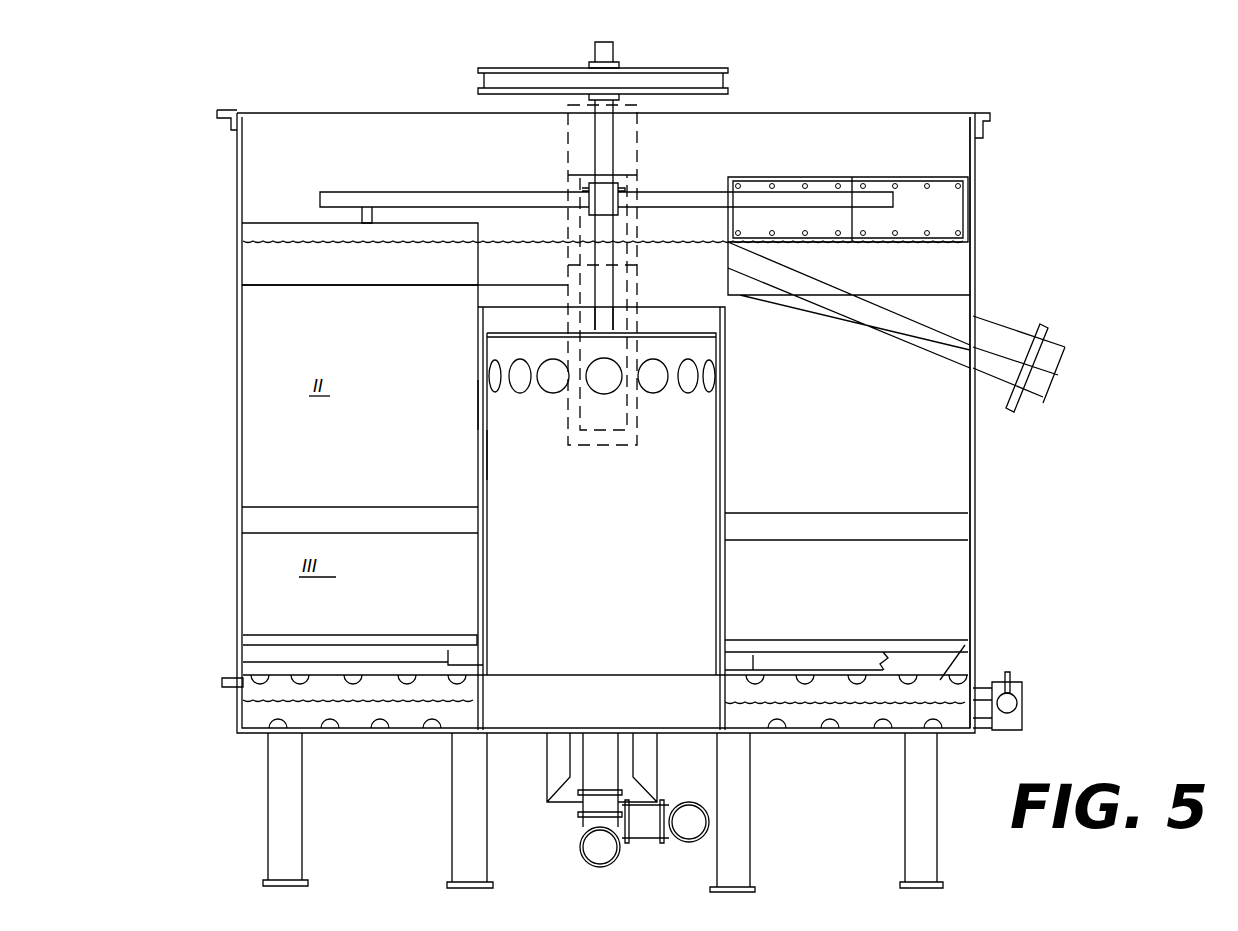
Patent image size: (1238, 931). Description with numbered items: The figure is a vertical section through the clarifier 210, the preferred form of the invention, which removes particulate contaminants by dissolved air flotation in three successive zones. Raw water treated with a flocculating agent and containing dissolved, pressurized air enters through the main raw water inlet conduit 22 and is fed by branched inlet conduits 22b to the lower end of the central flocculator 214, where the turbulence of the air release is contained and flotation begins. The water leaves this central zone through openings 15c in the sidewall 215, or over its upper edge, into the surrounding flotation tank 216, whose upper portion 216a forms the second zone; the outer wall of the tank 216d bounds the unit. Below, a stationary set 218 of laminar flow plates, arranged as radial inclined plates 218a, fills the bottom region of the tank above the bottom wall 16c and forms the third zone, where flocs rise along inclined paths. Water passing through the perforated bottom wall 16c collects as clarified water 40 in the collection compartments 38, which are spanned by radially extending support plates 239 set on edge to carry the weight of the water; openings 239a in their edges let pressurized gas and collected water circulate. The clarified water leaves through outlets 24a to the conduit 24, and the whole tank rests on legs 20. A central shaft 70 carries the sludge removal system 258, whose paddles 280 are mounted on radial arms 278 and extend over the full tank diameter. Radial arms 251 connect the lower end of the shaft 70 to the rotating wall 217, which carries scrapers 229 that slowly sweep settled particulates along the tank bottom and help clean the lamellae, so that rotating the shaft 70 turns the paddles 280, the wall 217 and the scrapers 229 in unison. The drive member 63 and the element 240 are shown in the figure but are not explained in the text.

The clarifier 210 is at (994, 96).
The shaft 70 is at (614, 50).
The pulley 63 is at (706, 72).
The radial arms 278 is at (453, 192).
The paddles 280 is at (287, 232).
The sludge removal system 258 is at (1003, 258).
The tank upper side wall 216d is at (976, 165).
The flotation tank 216 is at (986, 473).
The upper portion of the tank 216a is at (366, 345).
The set of laminar flow plates 218 is at (258, 571).
The radial inclined plates 218a is at (975, 600).
The central flocculator 214 is at (700, 436).
The rotating wall 217 is at (478, 407).
The sidewall 215 is at (489, 452).
The radial arms 251 is at (650, 306).
The openings 15c is at (702, 360).
The bottom wall 16c is at (688, 675).
The scrapers 229 is at (343, 647).
The support plates 239 is at (425, 683).
The openings 239a is at (380, 726).
The inclined deflector 240 is at (965, 645).
The clarified water 40 is at (248, 708).
The collection compartments 38 is at (254, 665).
The legs 20 is at (268, 805).
The branched inlet conduits 22b is at (547, 757).
The outlets 24a is at (618, 750).
The main raw water inlet conduit 22 is at (580, 848).
The conduit 24 is at (686, 845).